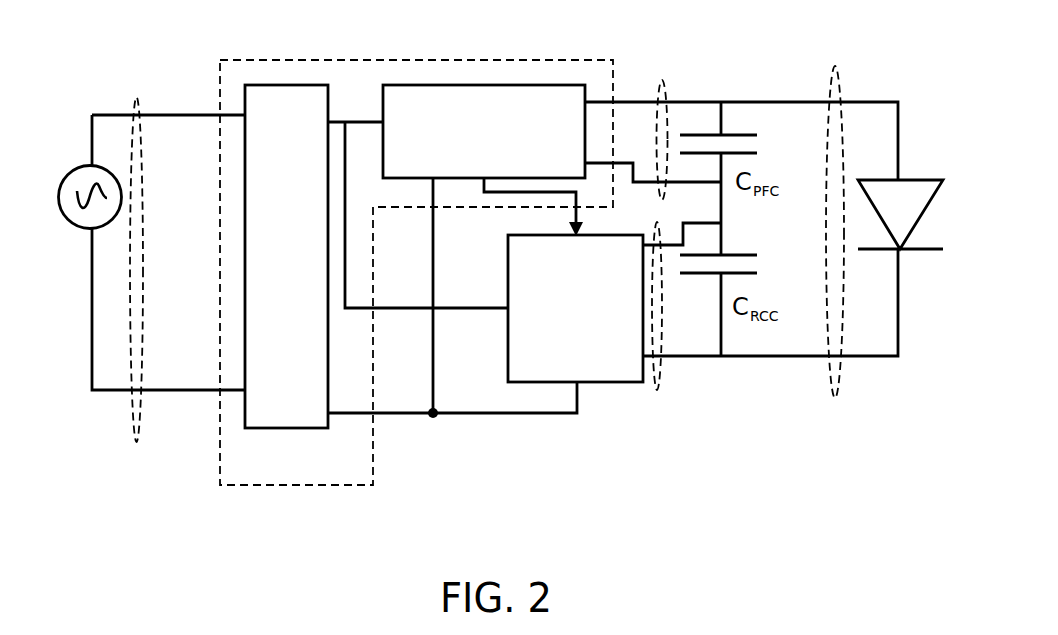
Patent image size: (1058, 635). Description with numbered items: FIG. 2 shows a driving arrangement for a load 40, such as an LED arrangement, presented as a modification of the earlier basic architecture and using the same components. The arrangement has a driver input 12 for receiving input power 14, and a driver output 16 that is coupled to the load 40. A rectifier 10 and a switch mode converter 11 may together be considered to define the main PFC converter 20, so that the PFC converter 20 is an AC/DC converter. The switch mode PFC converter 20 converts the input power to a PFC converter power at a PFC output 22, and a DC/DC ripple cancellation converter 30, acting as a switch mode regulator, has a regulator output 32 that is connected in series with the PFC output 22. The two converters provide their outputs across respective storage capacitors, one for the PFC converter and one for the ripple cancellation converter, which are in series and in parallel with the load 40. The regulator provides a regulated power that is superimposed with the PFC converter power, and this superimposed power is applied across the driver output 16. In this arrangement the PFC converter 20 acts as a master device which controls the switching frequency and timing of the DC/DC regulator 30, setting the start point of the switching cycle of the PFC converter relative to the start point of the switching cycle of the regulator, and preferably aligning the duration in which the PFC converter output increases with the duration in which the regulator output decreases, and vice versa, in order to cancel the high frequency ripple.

The rectifier 10 is at (283, 85).
The switch mode converter 11 is at (538, 85).
The driver input 12 is at (137, 97).
The input power 14 is at (75, 228).
The driver output 16 is at (840, 88).
The PFC converter 20 is at (423, 60).
The PFC output 22 is at (662, 80).
The DC/DC ripple cancellation converter 30 is at (597, 383).
The regulator output 32 is at (662, 368).
The load 40 is at (922, 180).